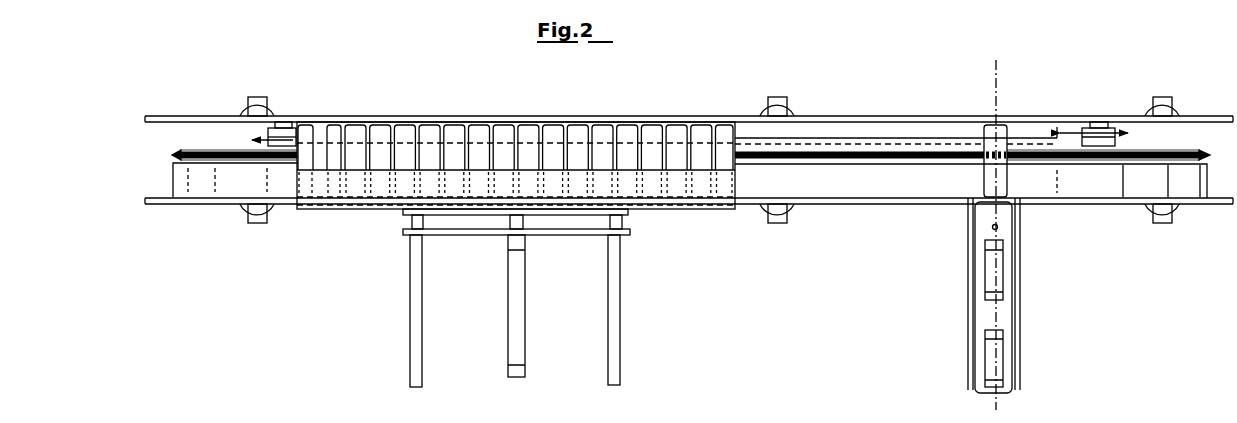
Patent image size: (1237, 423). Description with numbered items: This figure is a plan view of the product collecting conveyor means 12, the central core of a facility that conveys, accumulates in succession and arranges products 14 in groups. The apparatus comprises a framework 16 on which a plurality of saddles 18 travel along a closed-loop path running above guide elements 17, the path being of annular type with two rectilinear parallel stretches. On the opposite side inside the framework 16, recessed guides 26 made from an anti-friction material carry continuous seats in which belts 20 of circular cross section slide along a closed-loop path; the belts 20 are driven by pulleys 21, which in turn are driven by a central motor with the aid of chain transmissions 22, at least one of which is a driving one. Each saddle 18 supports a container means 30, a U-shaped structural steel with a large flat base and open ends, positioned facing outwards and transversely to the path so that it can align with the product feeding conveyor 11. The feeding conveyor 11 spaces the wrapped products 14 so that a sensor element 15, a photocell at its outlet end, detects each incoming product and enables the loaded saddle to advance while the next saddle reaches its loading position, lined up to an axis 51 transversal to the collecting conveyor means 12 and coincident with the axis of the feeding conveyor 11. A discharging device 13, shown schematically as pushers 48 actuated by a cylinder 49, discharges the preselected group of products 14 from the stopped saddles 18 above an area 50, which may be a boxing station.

The product feeding conveyor 11 is at (967, 303).
The product collecting conveyor means 12 is at (790, 276).
The discharging device 13 is at (410, 297).
The products 14 is at (1000, 272).
The sensor element 15 is at (999, 227).
The framework 16 is at (1208, 116).
The guide elements 17 is at (838, 167).
The saddles 18 is at (737, 130).
The belts 20 is at (176, 152).
The pulleys 21 is at (219, 150).
The chain transmissions 22 is at (1058, 128).
The recessed guides 26 is at (866, 140).
The container means 30 is at (623, 128).
The pushers 48 is at (563, 213).
The cylinder 49 is at (520, 290).
The area 50 is at (495, 86).
The axis 51 is at (994, 70).